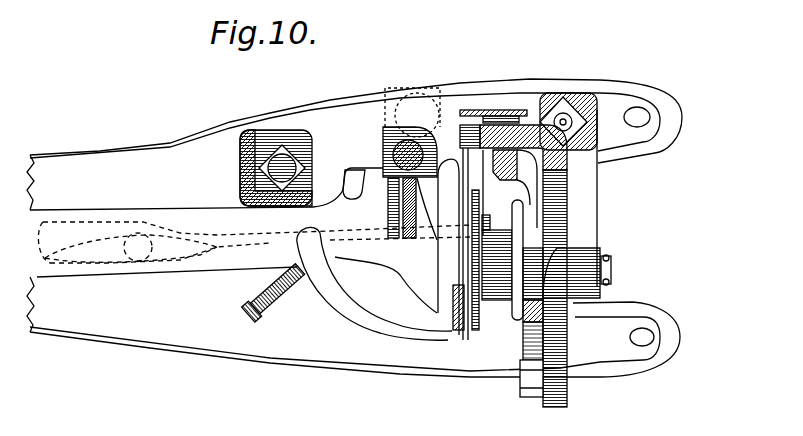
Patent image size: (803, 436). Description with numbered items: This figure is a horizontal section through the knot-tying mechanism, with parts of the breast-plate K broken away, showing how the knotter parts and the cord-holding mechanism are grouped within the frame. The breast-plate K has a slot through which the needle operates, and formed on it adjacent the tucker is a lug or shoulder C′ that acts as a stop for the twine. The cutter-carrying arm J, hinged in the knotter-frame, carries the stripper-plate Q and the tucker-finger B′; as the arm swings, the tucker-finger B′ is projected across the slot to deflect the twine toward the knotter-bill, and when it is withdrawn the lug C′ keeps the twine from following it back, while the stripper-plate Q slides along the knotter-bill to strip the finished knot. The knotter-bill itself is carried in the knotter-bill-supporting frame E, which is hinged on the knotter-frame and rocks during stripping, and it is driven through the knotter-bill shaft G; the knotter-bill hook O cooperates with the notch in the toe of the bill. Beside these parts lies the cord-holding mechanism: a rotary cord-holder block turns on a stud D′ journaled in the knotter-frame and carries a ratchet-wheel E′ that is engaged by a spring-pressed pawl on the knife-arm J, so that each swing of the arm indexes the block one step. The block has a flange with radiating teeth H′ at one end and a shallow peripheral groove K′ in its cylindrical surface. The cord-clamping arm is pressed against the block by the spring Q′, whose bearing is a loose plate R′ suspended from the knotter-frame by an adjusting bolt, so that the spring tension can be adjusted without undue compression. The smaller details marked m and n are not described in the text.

The breast-plate K is at (172, 143).
The tucker-finger B′ is at (254, 242).
The lug or shoulder C′ is at (303, 277).
The cutter-carrying arm J is at (460, 332).
The knotter-bill shaft G is at (410, 137).
The stripper-plate Q is at (348, 172).
The legs m is at (393, 212).
The knotter-bill hook O is at (405, 228).
The lever arm n is at (420, 250).
The plate R′ is at (495, 110).
The spring Q′ is at (508, 112).
The knotter-bill-supporting frame E is at (567, 214).
The ratchet-wheel E′ is at (537, 234).
The shallow peripheral groove K′ is at (483, 308).
The stud D′ is at (611, 270).
The radiating teeth H′ is at (600, 292).